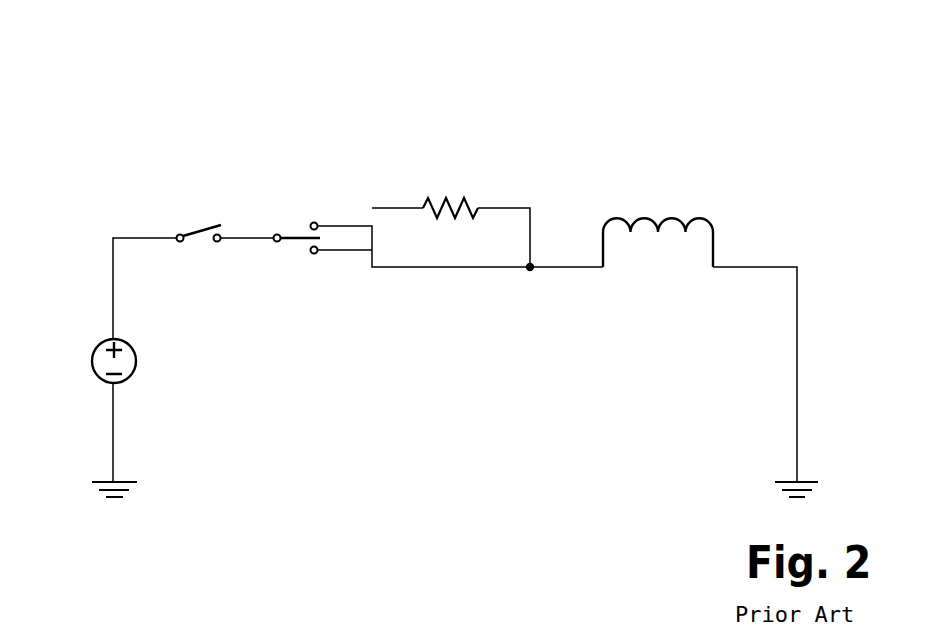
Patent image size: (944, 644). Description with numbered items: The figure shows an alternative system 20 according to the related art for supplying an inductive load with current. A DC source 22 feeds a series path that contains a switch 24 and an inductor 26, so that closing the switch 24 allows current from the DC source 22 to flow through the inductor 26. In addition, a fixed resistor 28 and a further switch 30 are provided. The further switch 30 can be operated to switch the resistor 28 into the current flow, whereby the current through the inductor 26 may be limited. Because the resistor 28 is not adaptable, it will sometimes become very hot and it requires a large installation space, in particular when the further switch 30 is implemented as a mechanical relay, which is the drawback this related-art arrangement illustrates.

The system 20 is at (541, 127).
The DC source 22 is at (95, 346).
The switch 24 is at (201, 222).
The inductor 26 is at (668, 215).
The fixed resistor 28 is at (440, 203).
The further switch 30 is at (294, 233).